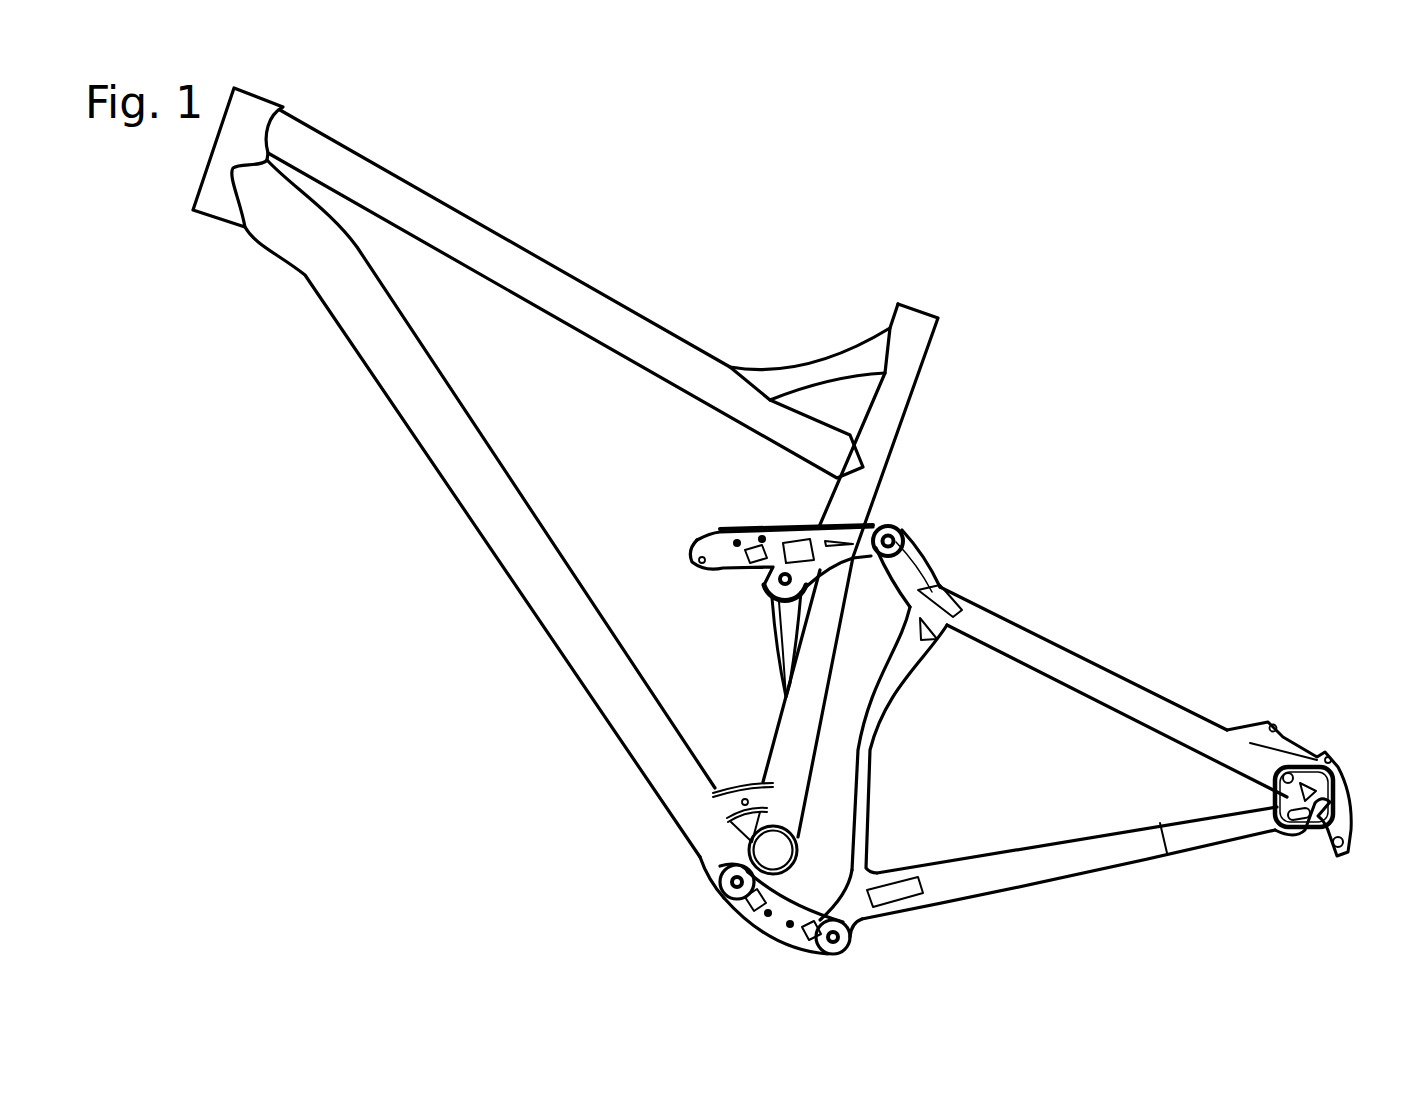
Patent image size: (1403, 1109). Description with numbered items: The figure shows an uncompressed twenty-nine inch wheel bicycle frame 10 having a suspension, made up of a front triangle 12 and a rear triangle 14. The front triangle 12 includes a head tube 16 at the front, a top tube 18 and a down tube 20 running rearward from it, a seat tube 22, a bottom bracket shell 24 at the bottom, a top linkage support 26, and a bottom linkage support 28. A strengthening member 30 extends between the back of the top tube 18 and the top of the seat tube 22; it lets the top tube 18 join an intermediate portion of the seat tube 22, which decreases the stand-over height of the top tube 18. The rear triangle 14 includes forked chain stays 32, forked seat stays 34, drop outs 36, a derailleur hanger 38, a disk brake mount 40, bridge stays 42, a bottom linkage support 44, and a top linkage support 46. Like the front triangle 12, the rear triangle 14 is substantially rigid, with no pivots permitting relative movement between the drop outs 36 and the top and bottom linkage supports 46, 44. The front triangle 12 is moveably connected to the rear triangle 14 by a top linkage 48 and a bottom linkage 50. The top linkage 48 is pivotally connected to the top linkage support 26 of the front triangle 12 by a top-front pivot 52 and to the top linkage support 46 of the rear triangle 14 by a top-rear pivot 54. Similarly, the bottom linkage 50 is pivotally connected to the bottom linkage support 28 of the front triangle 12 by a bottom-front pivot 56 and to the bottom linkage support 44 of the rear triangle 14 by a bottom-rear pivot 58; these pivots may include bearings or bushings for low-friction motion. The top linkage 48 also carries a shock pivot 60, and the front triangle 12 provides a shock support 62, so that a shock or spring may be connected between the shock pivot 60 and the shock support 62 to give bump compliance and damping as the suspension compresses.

The bicycle frame 10 is at (356, 773).
The front triangle 12 is at (341, 420).
The rear triangle 14 is at (1100, 574).
The head tube 16 is at (209, 186).
The top tube 18 is at (500, 238).
The down tube 20 is at (485, 520).
The seat tube 22 is at (897, 395).
The bottom bracket shell 24 is at (800, 863).
The top linkage support 26 is at (777, 611).
The bottom linkage support 28 is at (718, 865).
The strengthening member 30 is at (812, 366).
The forked chain stays 32 is at (1072, 865).
The forked seat stays 34 is at (1103, 680).
The drop outs 36 is at (1320, 831).
The derailleur hanger 38 is at (1347, 851).
The disk brake mount 40 is at (1273, 725).
The bridge stays 42 is at (875, 736).
The bottom linkage support 44 is at (876, 922).
The top linkage support 46 is at (905, 540).
The top linkage 48 is at (802, 527).
The bottom linkage 50 is at (776, 920).
The top-front pivot 52 is at (781, 581).
The top-rear pivot 54 is at (888, 538).
The bottom-front pivot 56 is at (737, 886).
The bottom-rear pivot 58 is at (836, 942).
The shock pivot 60 is at (698, 560).
The shock support 62 is at (743, 792).